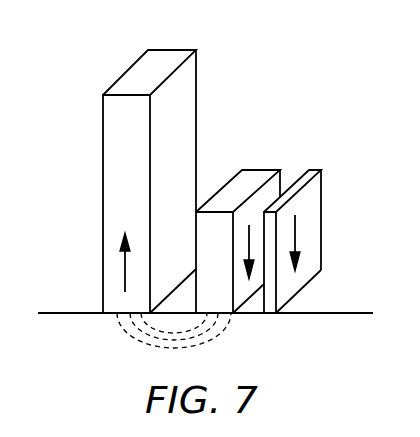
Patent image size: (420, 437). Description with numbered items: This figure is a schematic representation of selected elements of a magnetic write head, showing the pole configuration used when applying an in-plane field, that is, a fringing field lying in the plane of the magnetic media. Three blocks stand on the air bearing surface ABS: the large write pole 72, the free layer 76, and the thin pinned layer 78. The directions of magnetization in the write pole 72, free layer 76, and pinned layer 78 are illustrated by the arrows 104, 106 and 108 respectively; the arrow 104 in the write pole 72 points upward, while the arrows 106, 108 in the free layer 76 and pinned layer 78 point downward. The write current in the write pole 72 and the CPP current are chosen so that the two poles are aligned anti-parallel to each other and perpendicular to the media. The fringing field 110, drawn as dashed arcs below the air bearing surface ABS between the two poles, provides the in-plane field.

The write pole 72 is at (173, 50).
The free layer 76 is at (256, 168).
The pinned layer 78 is at (315, 169).
The arrow 104 is at (122, 269).
The arrow 106 is at (252, 250).
The arrow 108 is at (297, 240).
The fringing field 110 is at (132, 332).
The air bearing surface ABS is at (338, 313).